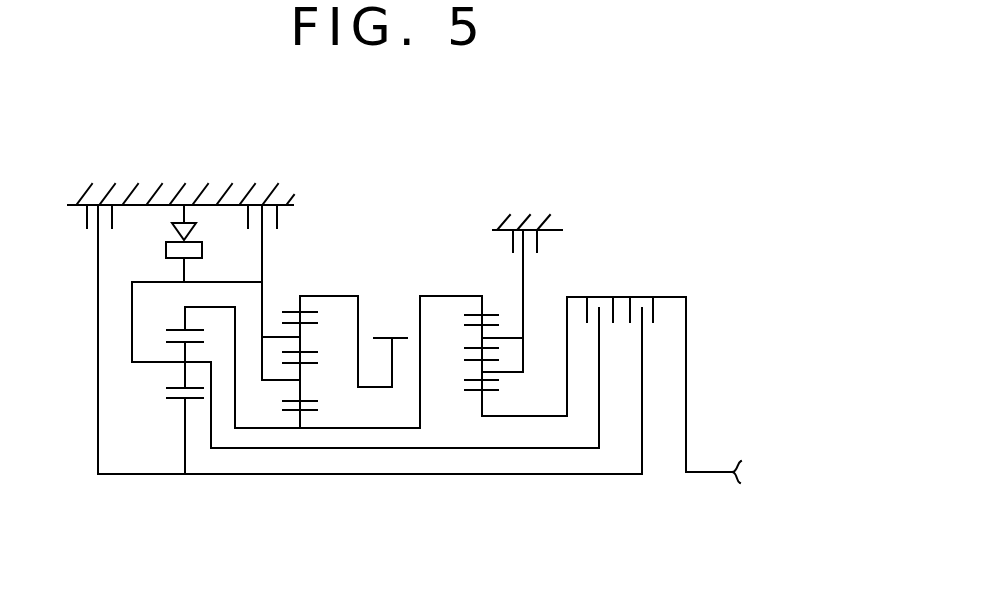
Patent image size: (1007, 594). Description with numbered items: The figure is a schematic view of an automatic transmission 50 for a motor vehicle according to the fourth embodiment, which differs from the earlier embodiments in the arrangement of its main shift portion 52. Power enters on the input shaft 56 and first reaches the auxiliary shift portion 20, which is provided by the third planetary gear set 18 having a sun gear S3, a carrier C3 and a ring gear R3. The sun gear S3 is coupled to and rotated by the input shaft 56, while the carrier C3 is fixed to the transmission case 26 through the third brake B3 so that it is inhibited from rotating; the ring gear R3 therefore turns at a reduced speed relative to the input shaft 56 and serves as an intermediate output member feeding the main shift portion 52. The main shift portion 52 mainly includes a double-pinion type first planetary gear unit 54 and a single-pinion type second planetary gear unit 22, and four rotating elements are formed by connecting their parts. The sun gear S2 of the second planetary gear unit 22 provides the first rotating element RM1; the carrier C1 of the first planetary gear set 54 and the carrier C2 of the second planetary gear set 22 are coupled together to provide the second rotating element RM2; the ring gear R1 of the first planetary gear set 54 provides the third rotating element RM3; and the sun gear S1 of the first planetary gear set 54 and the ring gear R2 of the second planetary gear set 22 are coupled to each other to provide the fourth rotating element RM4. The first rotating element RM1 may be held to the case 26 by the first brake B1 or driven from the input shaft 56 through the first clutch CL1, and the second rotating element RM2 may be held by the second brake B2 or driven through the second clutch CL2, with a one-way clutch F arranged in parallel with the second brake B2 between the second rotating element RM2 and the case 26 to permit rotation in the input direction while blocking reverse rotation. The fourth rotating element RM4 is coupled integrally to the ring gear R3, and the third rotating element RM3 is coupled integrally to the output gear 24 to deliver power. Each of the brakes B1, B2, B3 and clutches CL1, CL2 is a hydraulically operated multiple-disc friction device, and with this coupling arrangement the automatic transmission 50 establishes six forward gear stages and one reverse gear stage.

The automatic transmission 50 is at (712, 159).
The main shift portion 52 is at (396, 221).
The first planetary gear unit 54 is at (313, 274).
The third planetary gear set 18 is at (455, 283).
The auxiliary shift portion 20 is at (563, 221).
The input shaft 22 is at (717, 478).
The output gear 24 is at (382, 336).
The transmission case 26 is at (134, 200).
The second planetary gear unit 56 is at (174, 478).
The first brake B1 is at (77, 339).
The second brake B2 is at (282, 292).
The third brake B3 is at (546, 301).
The one-way clutch F is at (173, 243).
The ring gear R1 is at (292, 342).
The ring gear R2 is at (177, 328).
The ring gear R3 is at (491, 315).
The carrier C1 is at (262, 366).
The carrier C2 is at (132, 345).
The carrier C3 is at (523, 352).
The sun gear S1 is at (305, 410).
The sun gear S2 is at (180, 402).
The sun gear S3 is at (482, 395).
The first clutch CL1 is at (658, 365).
The second clutch CL2 is at (621, 352).
The first rotating element RM1 is at (335, 474).
The second rotating element RM2 is at (428, 448).
The third rotating element RM3 is at (333, 296).
The fourth rotating element RM4 is at (275, 428).